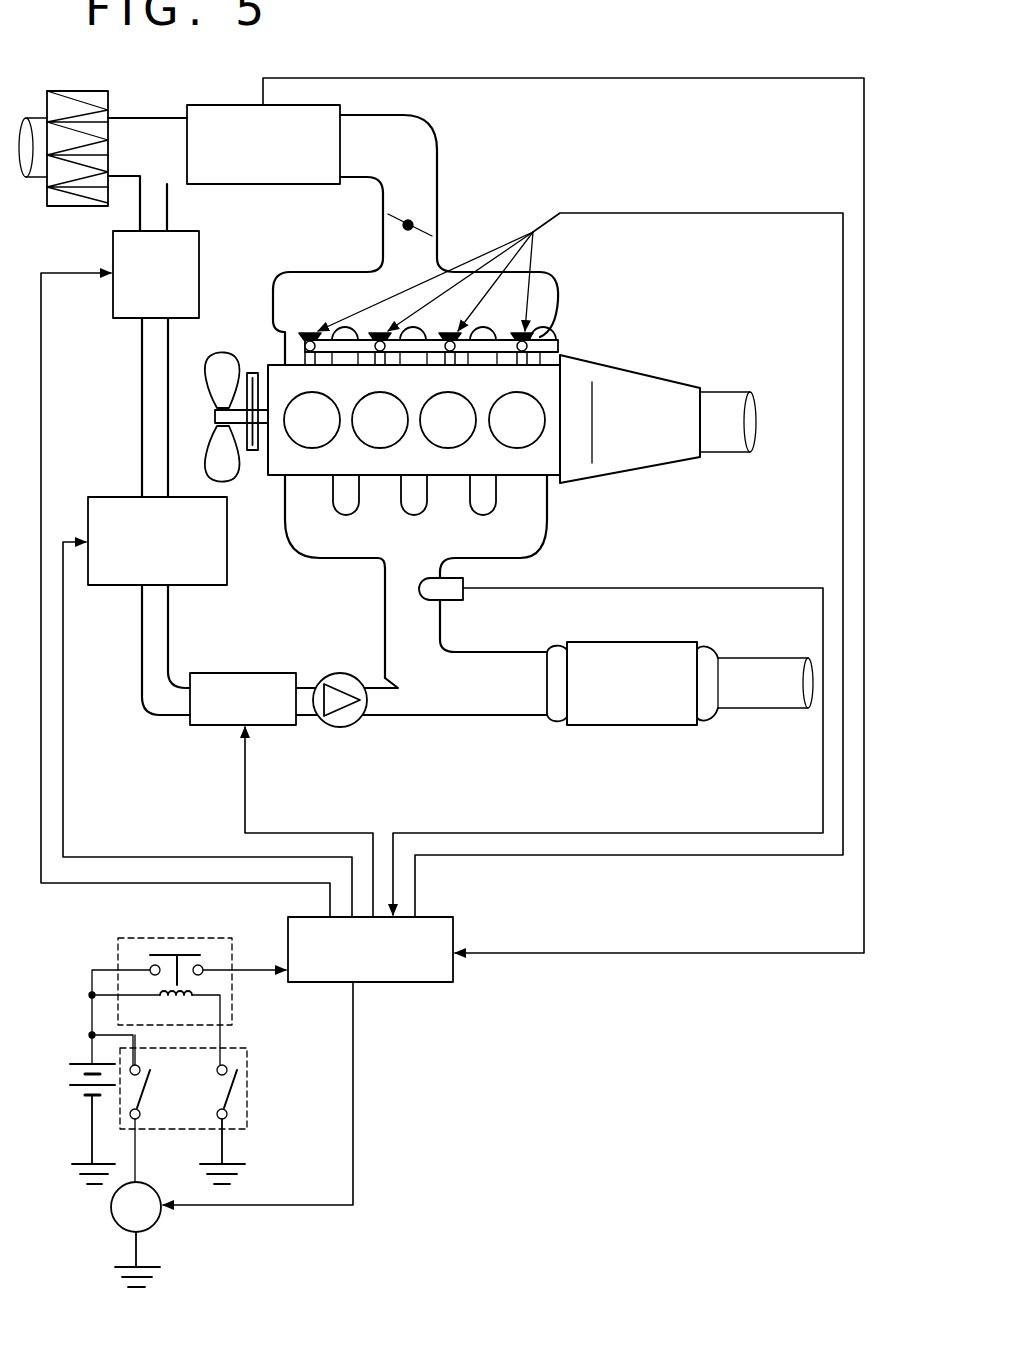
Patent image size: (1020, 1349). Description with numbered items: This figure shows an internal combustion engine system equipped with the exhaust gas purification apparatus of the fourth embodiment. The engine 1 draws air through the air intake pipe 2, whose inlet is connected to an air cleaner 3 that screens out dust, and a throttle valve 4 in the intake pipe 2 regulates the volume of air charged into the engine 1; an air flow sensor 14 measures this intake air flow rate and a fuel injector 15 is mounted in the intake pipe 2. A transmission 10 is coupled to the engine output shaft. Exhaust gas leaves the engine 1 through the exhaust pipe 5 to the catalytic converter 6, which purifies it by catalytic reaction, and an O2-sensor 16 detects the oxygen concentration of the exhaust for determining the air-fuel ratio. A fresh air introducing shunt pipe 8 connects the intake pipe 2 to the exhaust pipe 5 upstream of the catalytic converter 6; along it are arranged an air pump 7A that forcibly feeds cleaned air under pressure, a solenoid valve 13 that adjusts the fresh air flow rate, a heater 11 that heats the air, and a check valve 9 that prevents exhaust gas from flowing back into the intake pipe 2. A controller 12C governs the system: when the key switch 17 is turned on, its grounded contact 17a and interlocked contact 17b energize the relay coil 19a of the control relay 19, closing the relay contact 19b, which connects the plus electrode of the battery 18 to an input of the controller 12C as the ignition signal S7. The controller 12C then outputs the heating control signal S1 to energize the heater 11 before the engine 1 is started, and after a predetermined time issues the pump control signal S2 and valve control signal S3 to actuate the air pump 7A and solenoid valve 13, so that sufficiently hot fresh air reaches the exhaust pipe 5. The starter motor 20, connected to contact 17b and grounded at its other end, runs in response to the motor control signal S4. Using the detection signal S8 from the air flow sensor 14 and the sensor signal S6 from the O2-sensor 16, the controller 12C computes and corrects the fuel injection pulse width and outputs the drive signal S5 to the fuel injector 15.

The internal combustion engine 1 is at (270, 460).
The air intake pipe 2 is at (548, 282).
The air cleaner 3 is at (65, 208).
The throttle valve 4 is at (415, 219).
The exhaust pipe 5 is at (553, 535).
The catalytic converter 6 is at (648, 722).
The air pump 7A is at (110, 305).
The fresh air introducing shunt pipe 8 is at (142, 408).
The check valve 9 is at (340, 672).
The transmission 10 is at (683, 390).
The heater 11 is at (203, 728).
The controller 12C is at (455, 925).
The solenoid valve 13 is at (97, 588).
The air flow sensor 14 is at (263, 185).
The fuel injector 15 is at (545, 330).
The O2-sensor 16 is at (468, 598).
The key switch 17 is at (248, 1062).
The contact 17a is at (237, 1096).
The contact 17b is at (152, 1090).
The battery 18 is at (68, 1098).
The control relay 19 is at (195, 938).
The relay coil 19a is at (194, 990).
The relay contact 19b is at (160, 952).
The starter motor 20 is at (163, 1220).
The heating control signal S1 is at (309, 822).
The pump control signal S2 is at (83, 890).
The valve control signal S3 is at (134, 857).
The motor control signal S4 is at (303, 1205).
The drive signal S5 is at (600, 858).
The sensor signal S6 is at (540, 833).
The ignition signal S7 is at (255, 970).
The detection signal S8 is at (567, 955).